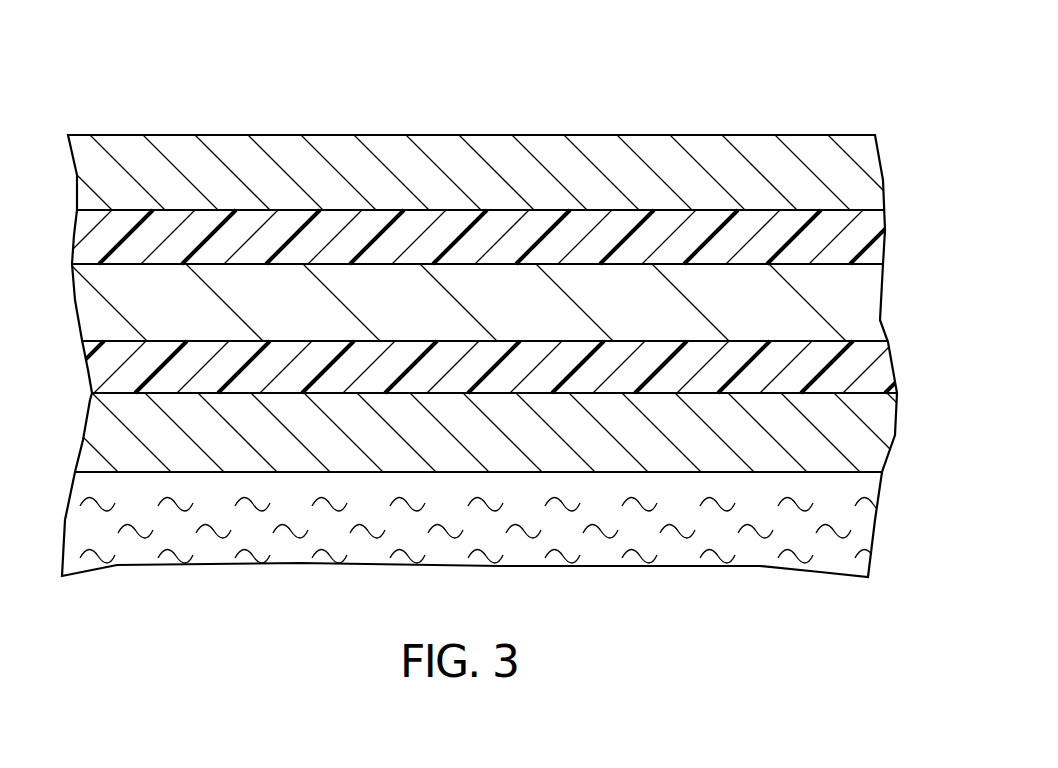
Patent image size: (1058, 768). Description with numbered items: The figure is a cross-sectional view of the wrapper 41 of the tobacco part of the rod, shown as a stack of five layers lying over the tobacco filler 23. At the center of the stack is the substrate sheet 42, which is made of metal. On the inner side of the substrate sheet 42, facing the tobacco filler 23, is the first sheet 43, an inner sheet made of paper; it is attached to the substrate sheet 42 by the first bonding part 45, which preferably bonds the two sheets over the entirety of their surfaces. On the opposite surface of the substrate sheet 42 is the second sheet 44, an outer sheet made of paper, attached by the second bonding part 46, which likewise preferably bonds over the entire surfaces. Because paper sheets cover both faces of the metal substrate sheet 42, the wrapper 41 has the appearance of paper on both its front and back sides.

The wrapper 41 is at (478, 118).
The second sheet 44 is at (862, 186).
The second bonding part 46 is at (860, 242).
The substrate sheet 42 is at (862, 304).
The first bonding part 45 is at (862, 367).
The first sheet 43 is at (862, 437).
The tobacco filler 23 is at (863, 529).